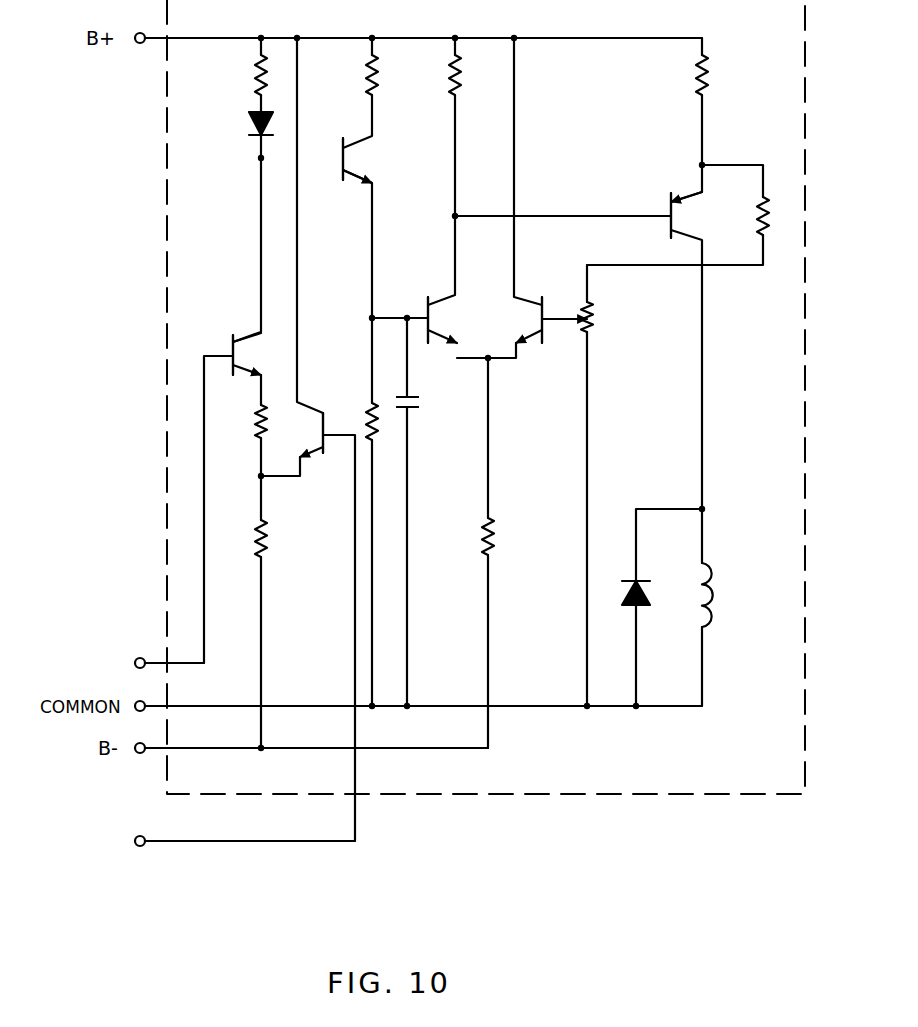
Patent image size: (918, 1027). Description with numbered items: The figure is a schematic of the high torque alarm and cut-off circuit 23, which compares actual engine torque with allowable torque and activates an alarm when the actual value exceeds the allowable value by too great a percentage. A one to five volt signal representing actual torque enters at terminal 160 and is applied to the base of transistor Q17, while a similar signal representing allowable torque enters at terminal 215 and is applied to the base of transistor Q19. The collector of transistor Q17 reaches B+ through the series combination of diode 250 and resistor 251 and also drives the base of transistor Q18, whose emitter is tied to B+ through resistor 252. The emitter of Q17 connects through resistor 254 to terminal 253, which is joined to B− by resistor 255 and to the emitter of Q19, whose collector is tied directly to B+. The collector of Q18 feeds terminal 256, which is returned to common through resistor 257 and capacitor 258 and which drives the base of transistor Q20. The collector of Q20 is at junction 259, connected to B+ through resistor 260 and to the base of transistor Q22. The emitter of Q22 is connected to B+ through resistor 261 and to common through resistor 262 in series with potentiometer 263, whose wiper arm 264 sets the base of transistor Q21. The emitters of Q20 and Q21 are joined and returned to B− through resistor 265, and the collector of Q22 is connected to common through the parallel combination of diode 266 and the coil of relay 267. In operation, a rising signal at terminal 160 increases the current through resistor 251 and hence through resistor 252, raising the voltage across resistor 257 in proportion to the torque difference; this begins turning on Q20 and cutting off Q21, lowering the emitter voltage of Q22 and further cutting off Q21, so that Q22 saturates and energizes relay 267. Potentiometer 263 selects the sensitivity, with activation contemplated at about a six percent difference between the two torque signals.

The high torque alarm and cut-off circuit 23 is at (740, 798).
The terminal 160 is at (146, 663).
The terminal 215 is at (220, 841).
The diode 250 is at (254, 126).
The resistor 251 is at (253, 72).
The resistor 252 is at (400, 66).
The terminal 253 is at (259, 478).
The resistor 254 is at (253, 420).
The resistor 255 is at (270, 545).
The terminal 256 is at (364, 316).
The resistor 257 is at (364, 418).
The capacitor 258 is at (427, 405).
The junction 259 is at (460, 214).
The resistor 260 is at (487, 66).
The resistor 261 is at (693, 78).
The resistor 262 is at (773, 218).
The potentiometer 263 is at (627, 316).
The wiper arm 264 is at (566, 312).
The resistor 265 is at (497, 545).
The diode 266 is at (654, 588).
The relay 267 is at (714, 590).
The transistor Q17 is at (242, 356).
The transistor Q18 is at (358, 162).
The transistor Q19 is at (312, 436).
The transistor Q20 is at (439, 319).
The transistor Q21 is at (530, 319).
The transistor Q22 is at (682, 219).